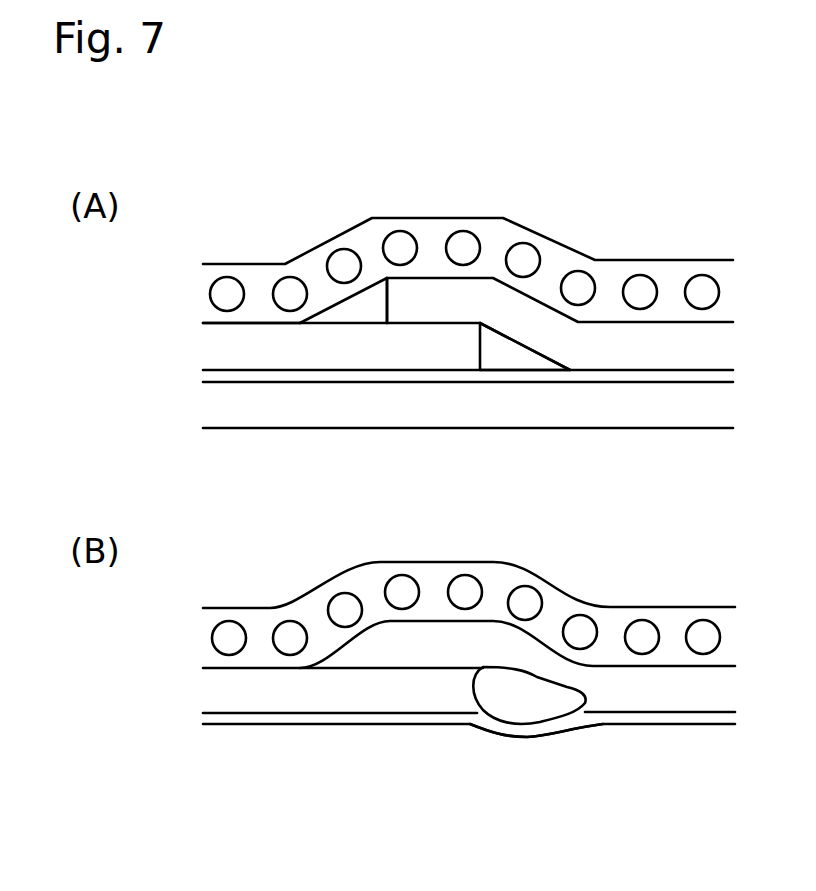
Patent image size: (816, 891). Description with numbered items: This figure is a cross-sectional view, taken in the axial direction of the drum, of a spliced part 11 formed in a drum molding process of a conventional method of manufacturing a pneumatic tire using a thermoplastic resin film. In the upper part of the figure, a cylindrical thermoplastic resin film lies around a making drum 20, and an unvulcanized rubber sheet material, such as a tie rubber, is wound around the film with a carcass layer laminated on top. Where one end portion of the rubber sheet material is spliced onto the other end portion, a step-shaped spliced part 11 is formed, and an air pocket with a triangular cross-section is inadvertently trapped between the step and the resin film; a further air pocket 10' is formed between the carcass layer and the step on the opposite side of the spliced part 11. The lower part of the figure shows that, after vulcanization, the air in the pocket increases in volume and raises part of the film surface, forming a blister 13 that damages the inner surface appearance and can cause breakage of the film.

The air pocket 10' is at (411, 262).
The spliced part 11 is at (457, 300).
The making drum 20 is at (245, 403).
The blister 13 is at (550, 735).